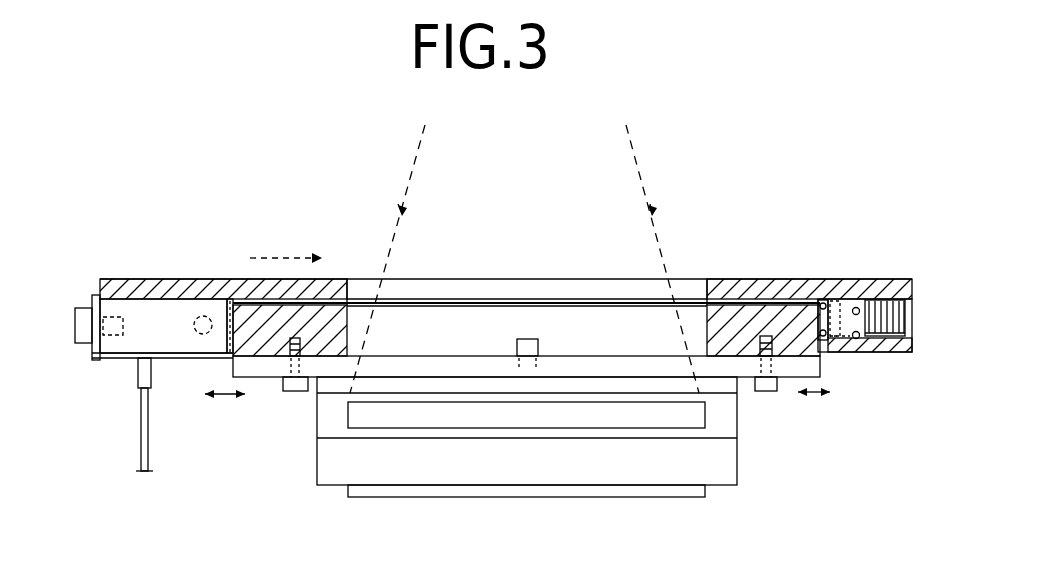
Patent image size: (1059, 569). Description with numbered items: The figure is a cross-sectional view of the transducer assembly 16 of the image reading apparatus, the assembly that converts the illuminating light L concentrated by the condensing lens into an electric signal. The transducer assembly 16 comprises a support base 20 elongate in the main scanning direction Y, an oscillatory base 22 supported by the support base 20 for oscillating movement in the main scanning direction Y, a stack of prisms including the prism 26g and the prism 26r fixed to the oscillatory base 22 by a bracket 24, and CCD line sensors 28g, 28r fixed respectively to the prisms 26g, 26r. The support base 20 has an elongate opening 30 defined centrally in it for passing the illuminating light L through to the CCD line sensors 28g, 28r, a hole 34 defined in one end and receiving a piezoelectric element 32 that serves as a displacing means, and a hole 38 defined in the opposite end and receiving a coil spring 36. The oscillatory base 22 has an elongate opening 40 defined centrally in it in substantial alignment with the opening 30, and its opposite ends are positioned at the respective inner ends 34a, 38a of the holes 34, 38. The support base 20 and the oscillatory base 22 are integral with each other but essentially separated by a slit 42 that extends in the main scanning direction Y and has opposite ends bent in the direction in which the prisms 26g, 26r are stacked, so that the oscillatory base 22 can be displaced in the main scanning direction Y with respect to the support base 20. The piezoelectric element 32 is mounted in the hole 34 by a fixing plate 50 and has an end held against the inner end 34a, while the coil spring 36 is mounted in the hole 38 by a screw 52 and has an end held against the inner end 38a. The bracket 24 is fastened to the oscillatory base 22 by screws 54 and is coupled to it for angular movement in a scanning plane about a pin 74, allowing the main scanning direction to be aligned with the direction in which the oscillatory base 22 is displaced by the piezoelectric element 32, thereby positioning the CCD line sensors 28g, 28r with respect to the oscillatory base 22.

The transducer assembly 16 is at (778, 194).
The support base 20 is at (870, 300).
The oscillatory base 22 is at (732, 295).
The bracket 24 is at (625, 367).
The prism 26r is at (728, 418).
The prism 26g is at (727, 467).
The CCD line sensor 28r is at (368, 412).
The CCD line sensor 28g is at (540, 497).
The elongate opening 30 is at (520, 290).
The piezoelectric element 32 is at (168, 318).
The hole 34 is at (130, 281).
The inner end 34a is at (243, 300).
The coil spring 36 is at (855, 352).
The hole 38 is at (850, 300).
The inner end 38a is at (813, 325).
The elongate opening 40 is at (568, 290).
The slit 42 is at (457, 290).
The fixing plate 50 is at (85, 360).
The screw 52 is at (890, 300).
The screws 54 is at (290, 392).
The pin 74 is at (517, 345).
The illuminating light L is at (641, 167).
The main scanning direction Y is at (296, 253).